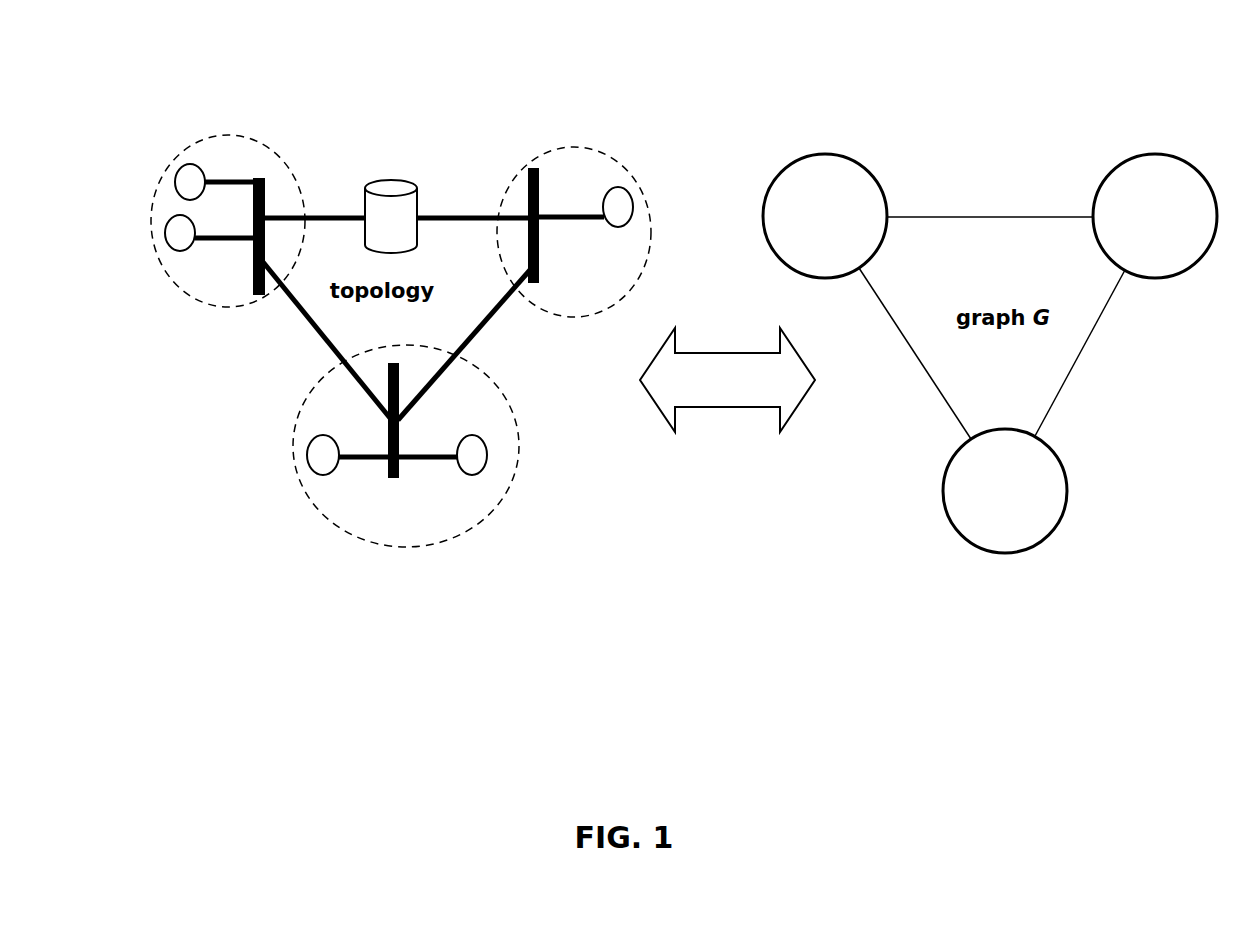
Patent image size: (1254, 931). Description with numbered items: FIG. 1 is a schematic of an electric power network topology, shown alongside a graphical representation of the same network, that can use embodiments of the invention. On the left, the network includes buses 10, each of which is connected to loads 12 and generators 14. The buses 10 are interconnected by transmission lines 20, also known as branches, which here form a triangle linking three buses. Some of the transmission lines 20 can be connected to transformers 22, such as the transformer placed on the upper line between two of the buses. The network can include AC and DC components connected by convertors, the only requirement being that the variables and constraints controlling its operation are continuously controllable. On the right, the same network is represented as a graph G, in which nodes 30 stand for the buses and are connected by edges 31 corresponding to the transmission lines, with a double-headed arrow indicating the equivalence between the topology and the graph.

The buses 10 is at (266, 186).
The loads 12 is at (175, 186).
The generators 14 is at (178, 252).
The transmission lines 20 is at (452, 214).
The transformers 22 is at (400, 181).
The nodes 30 is at (813, 154).
The edges 31 is at (1058, 216).